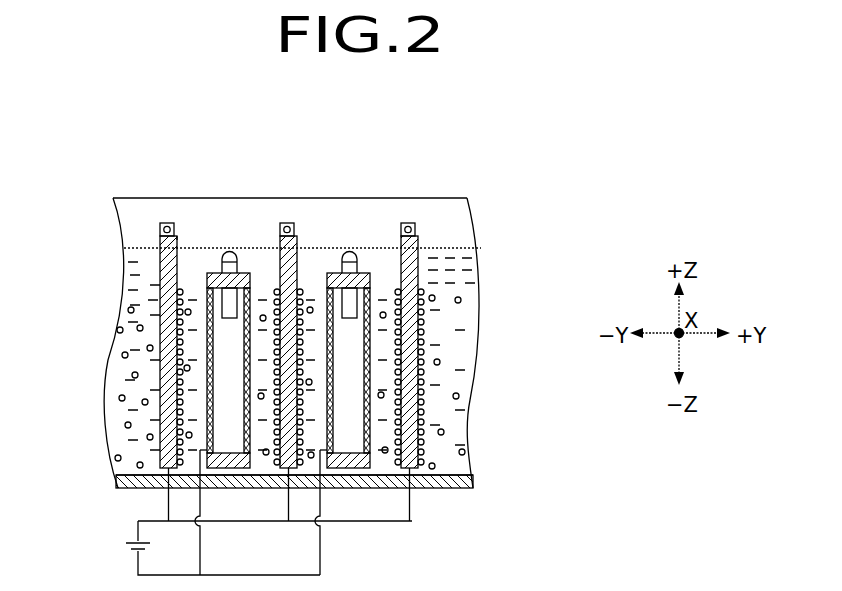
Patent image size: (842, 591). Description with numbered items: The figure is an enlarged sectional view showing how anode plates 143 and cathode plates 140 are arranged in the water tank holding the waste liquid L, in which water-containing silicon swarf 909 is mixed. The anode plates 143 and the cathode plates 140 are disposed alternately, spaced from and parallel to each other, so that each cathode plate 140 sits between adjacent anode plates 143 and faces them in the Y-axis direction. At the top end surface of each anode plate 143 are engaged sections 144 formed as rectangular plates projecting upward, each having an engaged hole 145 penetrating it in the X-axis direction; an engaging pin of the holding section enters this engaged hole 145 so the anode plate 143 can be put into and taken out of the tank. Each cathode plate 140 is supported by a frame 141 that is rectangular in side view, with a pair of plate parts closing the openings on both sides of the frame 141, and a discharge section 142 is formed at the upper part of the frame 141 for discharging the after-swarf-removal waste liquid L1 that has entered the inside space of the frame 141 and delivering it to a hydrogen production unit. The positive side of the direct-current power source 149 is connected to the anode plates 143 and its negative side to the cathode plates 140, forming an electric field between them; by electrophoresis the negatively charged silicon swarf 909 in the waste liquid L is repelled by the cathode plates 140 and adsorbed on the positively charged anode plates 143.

The cathode plate 140 is at (327, 346).
The frame 141 is at (208, 273).
The discharge section 142 is at (230, 252).
The anode plate 143 is at (285, 292).
The engaged section 144 is at (171, 223).
The engaged hole 145 is at (179, 236).
The direct-current power source 149 is at (125, 543).
The silicon swarf 909 is at (180, 290).
The waste liquid L is at (137, 238).
The after-swarf-removal waste liquid L1 is at (225, 395).